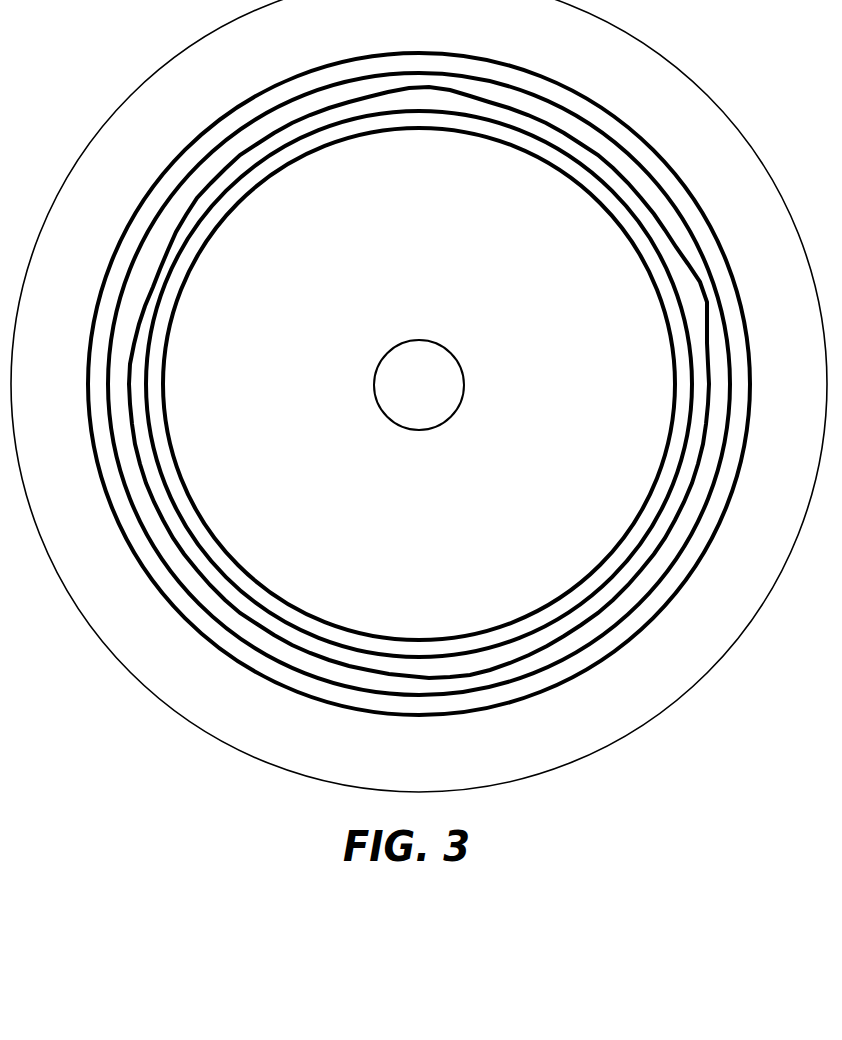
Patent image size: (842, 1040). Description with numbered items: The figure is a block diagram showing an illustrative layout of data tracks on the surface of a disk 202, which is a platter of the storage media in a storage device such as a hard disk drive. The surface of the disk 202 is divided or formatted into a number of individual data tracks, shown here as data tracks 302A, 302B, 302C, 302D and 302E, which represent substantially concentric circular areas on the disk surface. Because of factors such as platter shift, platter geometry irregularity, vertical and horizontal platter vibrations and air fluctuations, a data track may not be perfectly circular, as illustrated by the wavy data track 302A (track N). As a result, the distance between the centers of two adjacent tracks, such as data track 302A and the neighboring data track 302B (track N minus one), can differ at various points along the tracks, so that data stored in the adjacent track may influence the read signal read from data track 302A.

The disk 202 is at (436, 294).
The data track 302A is at (632, 182).
The data track 302B is at (578, 113).
The data track 302C is at (580, 168).
The data track 302D is at (550, 80).
The data track 302E is at (610, 216).